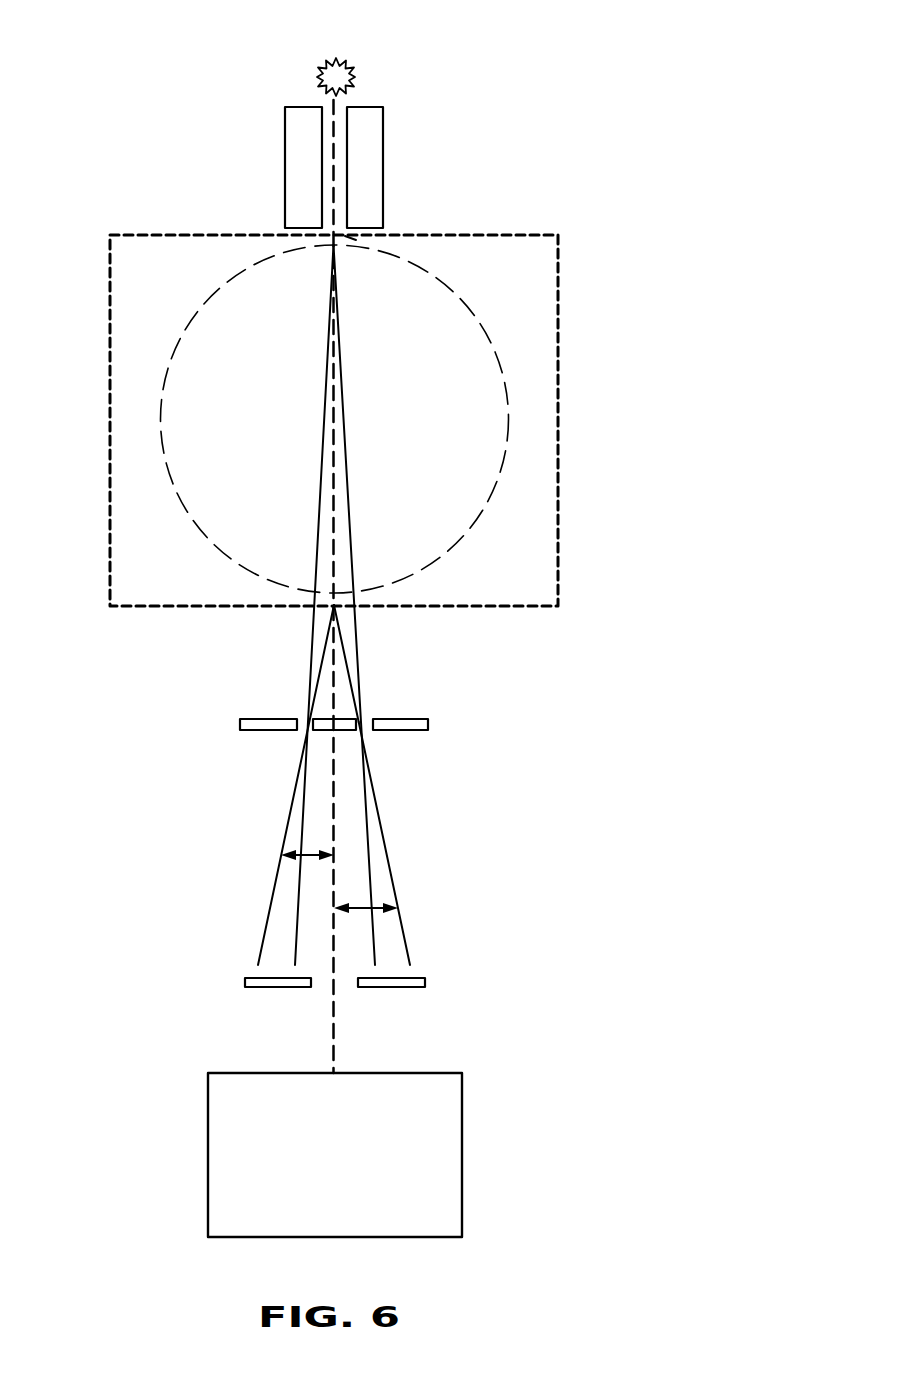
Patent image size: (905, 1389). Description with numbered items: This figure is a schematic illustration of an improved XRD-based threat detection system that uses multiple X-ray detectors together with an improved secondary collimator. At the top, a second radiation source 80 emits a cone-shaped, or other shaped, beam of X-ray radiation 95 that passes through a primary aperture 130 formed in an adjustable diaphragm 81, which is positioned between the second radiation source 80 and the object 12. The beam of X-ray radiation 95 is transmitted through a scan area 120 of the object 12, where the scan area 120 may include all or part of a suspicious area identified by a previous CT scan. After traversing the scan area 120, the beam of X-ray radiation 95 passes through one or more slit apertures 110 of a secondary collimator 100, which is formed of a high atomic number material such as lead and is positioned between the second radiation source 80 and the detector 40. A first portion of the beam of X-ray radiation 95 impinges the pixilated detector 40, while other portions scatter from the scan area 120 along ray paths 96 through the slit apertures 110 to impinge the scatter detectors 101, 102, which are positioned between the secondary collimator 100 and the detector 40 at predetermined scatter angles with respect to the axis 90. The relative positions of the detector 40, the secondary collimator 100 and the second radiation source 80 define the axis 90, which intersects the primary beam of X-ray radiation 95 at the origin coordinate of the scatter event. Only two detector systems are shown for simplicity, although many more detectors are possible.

The second radiation source 80 is at (303, 88).
The adjustable diaphragm 81 is at (383, 228).
The primary aperture 130 is at (362, 240).
The object 12 is at (558, 268).
The scan area 120 is at (185, 510).
The beam of X-ray radiation 95 is at (343, 405).
The slit aperture 110 is at (370, 690).
The ray paths 96 is at (393, 848).
The secondary collimator 100 is at (425, 716).
The scatter detector 101 is at (245, 982).
The scatter detector 102 is at (425, 981).
The axis 90 is at (336, 1044).
The detector 40 is at (335, 1155).